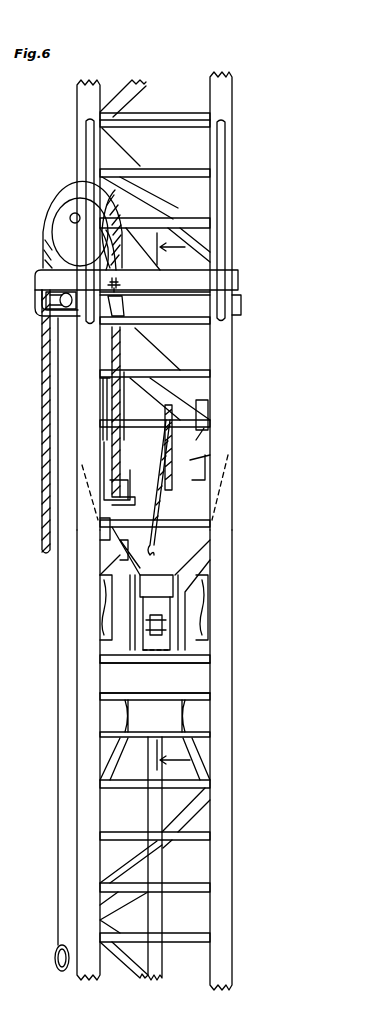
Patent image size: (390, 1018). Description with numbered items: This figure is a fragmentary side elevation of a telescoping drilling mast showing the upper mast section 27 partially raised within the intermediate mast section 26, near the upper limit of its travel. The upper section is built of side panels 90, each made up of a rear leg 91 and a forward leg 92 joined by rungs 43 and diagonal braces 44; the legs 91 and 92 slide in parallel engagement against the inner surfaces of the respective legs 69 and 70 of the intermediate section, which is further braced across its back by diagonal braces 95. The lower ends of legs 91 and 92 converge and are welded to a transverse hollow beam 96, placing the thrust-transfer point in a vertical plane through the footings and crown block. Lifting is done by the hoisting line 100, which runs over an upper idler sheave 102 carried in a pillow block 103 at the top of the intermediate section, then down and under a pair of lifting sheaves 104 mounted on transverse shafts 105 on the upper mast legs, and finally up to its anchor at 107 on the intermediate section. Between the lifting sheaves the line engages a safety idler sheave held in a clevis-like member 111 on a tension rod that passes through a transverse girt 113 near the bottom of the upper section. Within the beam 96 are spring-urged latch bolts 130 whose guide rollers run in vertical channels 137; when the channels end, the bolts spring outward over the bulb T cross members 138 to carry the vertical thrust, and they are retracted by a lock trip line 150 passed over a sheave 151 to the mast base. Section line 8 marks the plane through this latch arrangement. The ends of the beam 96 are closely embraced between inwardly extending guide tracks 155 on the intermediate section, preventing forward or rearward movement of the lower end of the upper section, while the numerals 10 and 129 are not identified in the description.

The section line 8— 8 is at (173, 507).
The guide plate 10 is at (68, 349).
The intermediate mast section 26 is at (246, 831).
The upper mast section 27 is at (246, 174).
The rungs 43 is at (168, 883).
The diagonal braces 44 is at (160, 845).
The leg of the intermediate section 69 is at (80, 874).
The front leg of the intermediate section 70 is at (221, 885).
The side panel 90 is at (246, 102).
The rear leg 91 is at (86, 102).
The forward leg 92 is at (227, 135).
The diagonal braces 95 is at (66, 800).
The transverse hollow beam 96 is at (182, 640).
The hoisting line 100 is at (118, 262).
The upper idler sheave 102 is at (62, 190).
The pillow block 103 is at (69, 222).
The sheaves 104 is at (122, 398).
The transverse shafts 105 is at (193, 420).
The anchor 107 is at (126, 292).
The clevis-like member 111 is at (128, 484).
The transverse girt 113 is at (126, 535).
The latch 129 is at (56, 300).
The latch bolts 130 is at (148, 650).
The vertical channels 137 is at (155, 950).
The bulb T cross members 138 is at (190, 680).
The lock trip line 150 is at (163, 458).
The sheave 151 is at (166, 416).
The guide tracks 155 is at (182, 628).